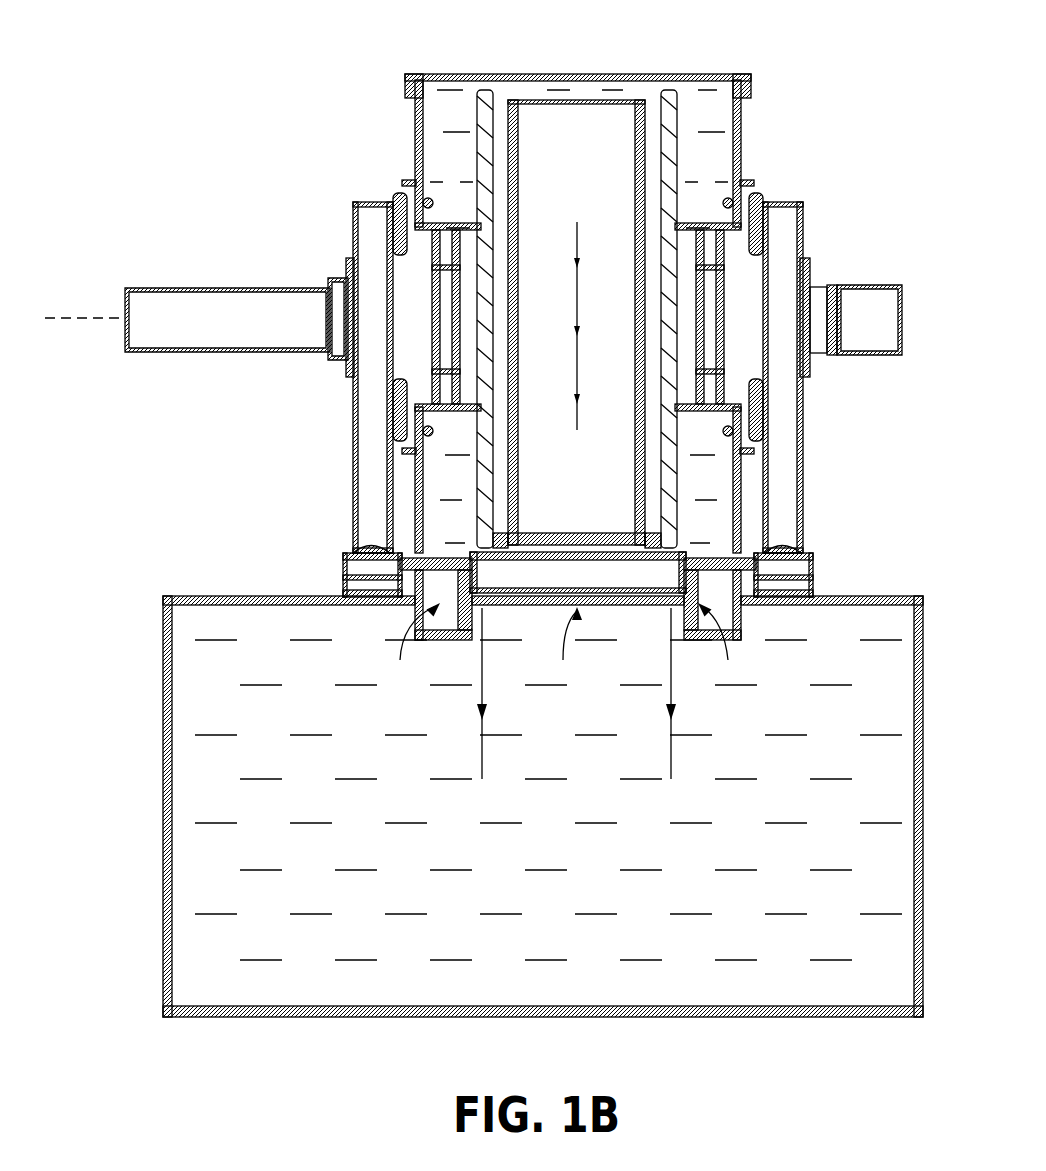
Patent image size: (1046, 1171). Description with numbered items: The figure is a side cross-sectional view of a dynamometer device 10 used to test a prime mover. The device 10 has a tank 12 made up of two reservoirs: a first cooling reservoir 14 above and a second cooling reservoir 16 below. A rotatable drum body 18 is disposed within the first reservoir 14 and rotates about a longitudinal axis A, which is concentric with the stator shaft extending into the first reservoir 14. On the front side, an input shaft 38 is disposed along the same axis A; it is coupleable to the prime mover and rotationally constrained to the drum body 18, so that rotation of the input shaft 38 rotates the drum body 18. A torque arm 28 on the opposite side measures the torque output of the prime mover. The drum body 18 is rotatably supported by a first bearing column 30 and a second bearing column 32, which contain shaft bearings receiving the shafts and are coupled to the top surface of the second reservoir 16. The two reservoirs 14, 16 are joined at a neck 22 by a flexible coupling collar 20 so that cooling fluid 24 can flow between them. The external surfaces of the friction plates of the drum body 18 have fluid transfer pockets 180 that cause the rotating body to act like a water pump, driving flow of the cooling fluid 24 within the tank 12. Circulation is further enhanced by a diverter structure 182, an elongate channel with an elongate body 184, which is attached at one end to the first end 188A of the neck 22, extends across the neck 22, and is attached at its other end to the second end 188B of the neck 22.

The dynamometer device 10 is at (200, 122).
The tank 12 is at (235, 562).
The first cooling reservoir 14 is at (422, 170).
The second cooling reservoir 16 is at (163, 787).
The rotatable drum body 18 is at (488, 92).
The flexible coupling collar 20 is at (720, 623).
The neck 22 is at (431, 621).
The cooling fluid 24 is at (722, 476).
The torque arm 28 is at (888, 338).
The first bearing column 30 is at (365, 490).
The second bearing column 32 is at (787, 530).
The input shaft 38 is at (202, 350).
The fluid transfer pockets 180 is at (465, 148).
The diverter structure 182 is at (560, 662).
The elongate body 184 is at (627, 552).
The first end of the neck 188A is at (468, 572).
The second end of the neck 188B is at (705, 577).
The longitudinal axis A is at (73, 325).